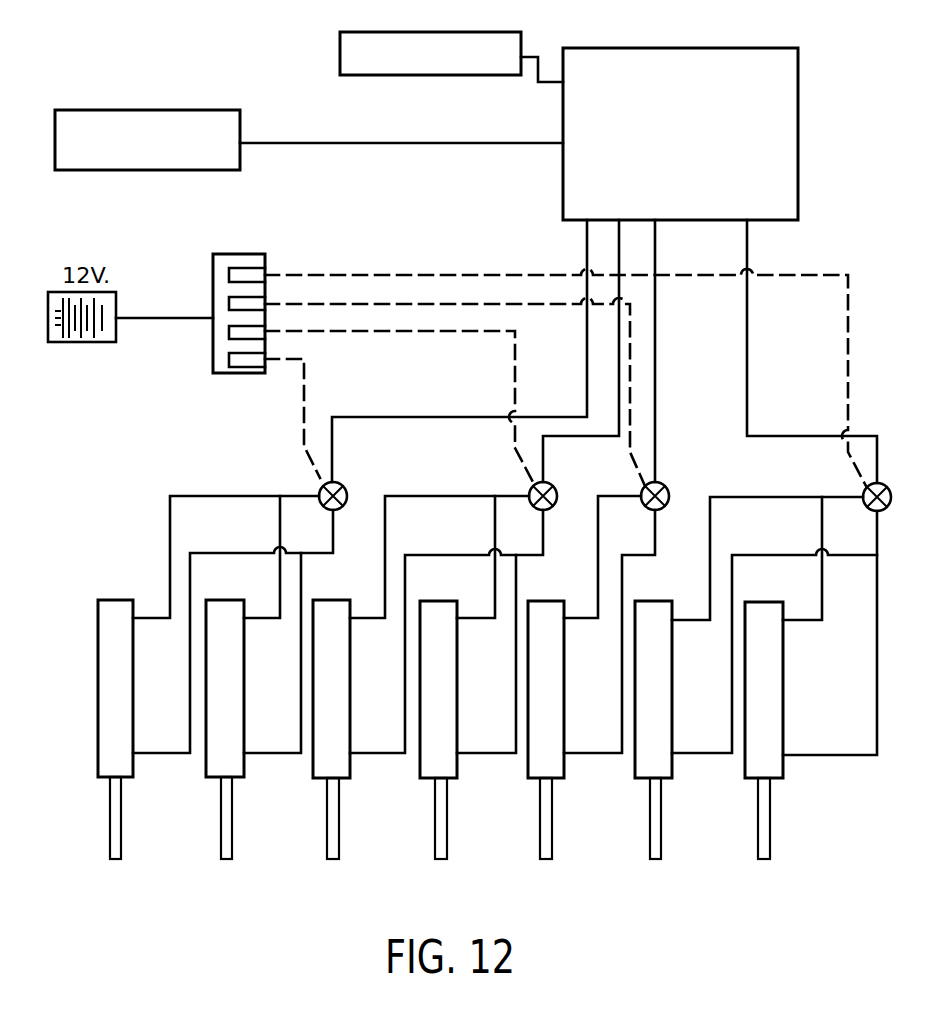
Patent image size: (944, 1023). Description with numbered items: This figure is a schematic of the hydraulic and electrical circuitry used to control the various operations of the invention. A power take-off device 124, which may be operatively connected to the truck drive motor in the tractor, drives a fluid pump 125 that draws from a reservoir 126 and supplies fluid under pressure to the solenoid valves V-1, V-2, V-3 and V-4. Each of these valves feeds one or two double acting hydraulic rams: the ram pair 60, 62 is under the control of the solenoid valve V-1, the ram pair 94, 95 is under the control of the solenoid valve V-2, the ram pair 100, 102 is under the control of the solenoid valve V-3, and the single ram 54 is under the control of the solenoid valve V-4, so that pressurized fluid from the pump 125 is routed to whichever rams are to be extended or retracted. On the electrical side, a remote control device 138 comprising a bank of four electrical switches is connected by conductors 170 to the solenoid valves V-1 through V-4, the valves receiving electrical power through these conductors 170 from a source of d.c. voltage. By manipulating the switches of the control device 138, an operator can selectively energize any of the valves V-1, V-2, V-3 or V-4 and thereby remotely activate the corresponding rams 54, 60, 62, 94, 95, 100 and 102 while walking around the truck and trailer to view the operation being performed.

The power take-off device 124 is at (186, 110).
The fluid pump 125 is at (725, 47).
The reservoir 126 is at (462, 31).
The remote control device 138 is at (255, 373).
The conductors 170 is at (395, 281).
The hydraulic ram 60 is at (98, 660).
The hydraulic ram 62 is at (244, 645).
The hydraulic ram 94 is at (350, 645).
The hydraulic ram 95 is at (457, 645).
The hydraulic ram 54 is at (564, 645).
The hydraulic ram 100 is at (672, 645).
The hydraulic ram 102 is at (783, 645).
The solenoid valve V-1 is at (321, 487).
The solenoid valve V-2 is at (531, 488).
The solenoid valve V-3 is at (865, 488).
The solenoid valve V-4 is at (669, 490).